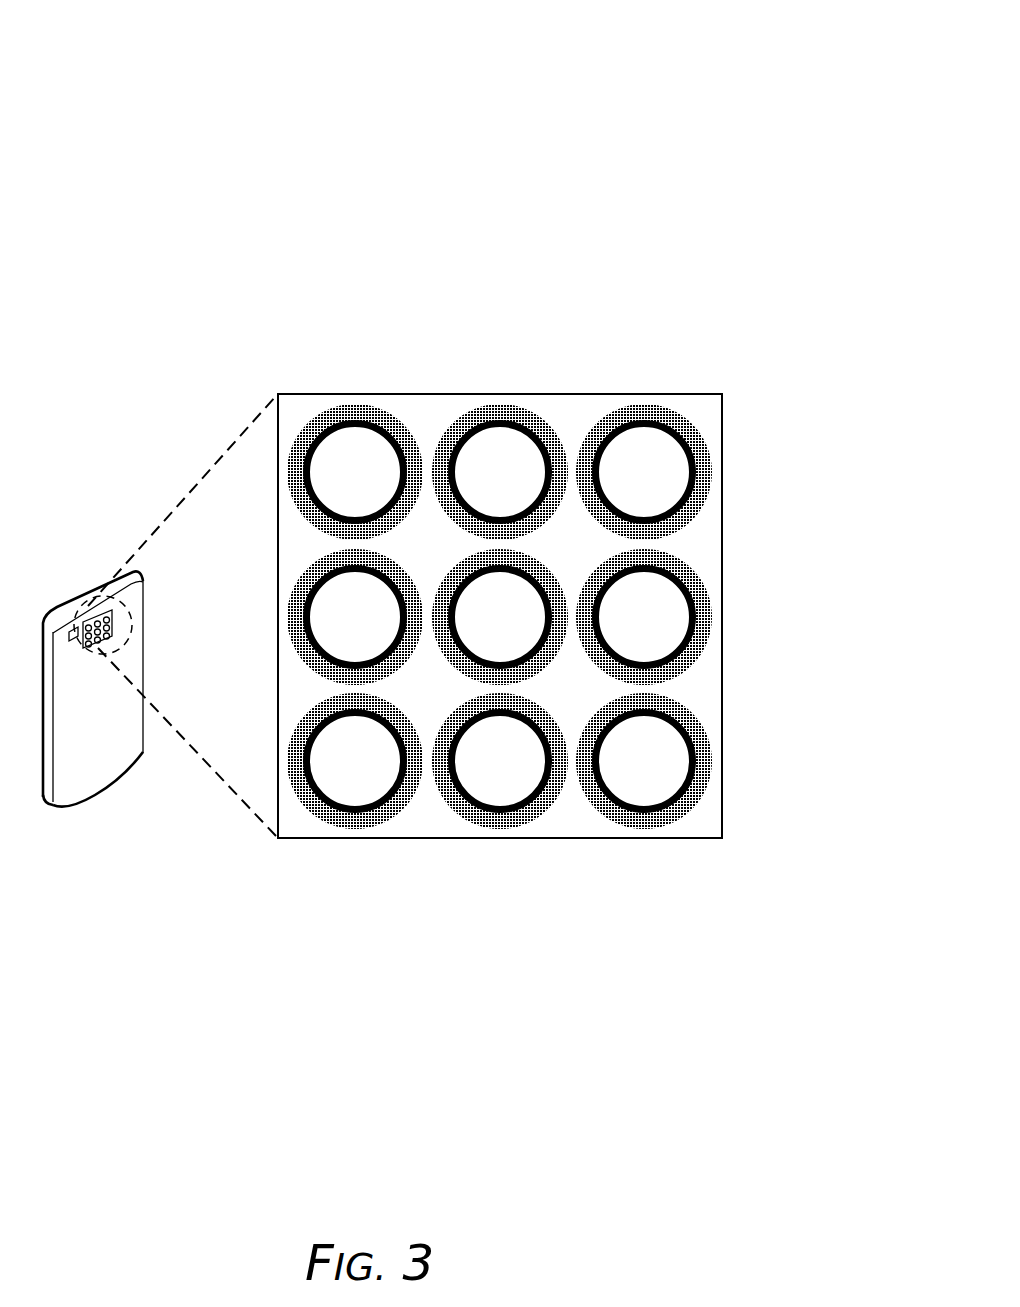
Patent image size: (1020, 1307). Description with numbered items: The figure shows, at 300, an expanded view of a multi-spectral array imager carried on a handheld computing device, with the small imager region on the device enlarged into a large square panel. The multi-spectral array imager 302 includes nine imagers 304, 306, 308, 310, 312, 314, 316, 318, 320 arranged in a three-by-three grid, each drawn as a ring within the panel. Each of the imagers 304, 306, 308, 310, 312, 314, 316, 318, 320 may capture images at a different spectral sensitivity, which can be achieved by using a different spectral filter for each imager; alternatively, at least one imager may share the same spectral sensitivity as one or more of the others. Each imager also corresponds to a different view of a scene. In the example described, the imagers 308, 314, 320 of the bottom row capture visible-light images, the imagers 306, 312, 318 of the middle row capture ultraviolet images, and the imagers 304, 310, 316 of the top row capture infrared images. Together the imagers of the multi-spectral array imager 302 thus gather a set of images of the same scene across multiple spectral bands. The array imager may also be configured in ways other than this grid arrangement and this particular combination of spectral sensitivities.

The expanded view of a multi-spectral array imager 300 is at (597, 68).
The multi-spectral array imager 302 is at (690, 396).
The imager 304 is at (335, 483).
The imager 306 is at (335, 628).
The imager 308 is at (335, 772).
The imager 310 is at (480, 483).
The imager 312 is at (480, 628).
The imager 314 is at (480, 772).
The imager 316 is at (624, 483).
The imager 318 is at (624, 628).
The imager 320 is at (624, 772).